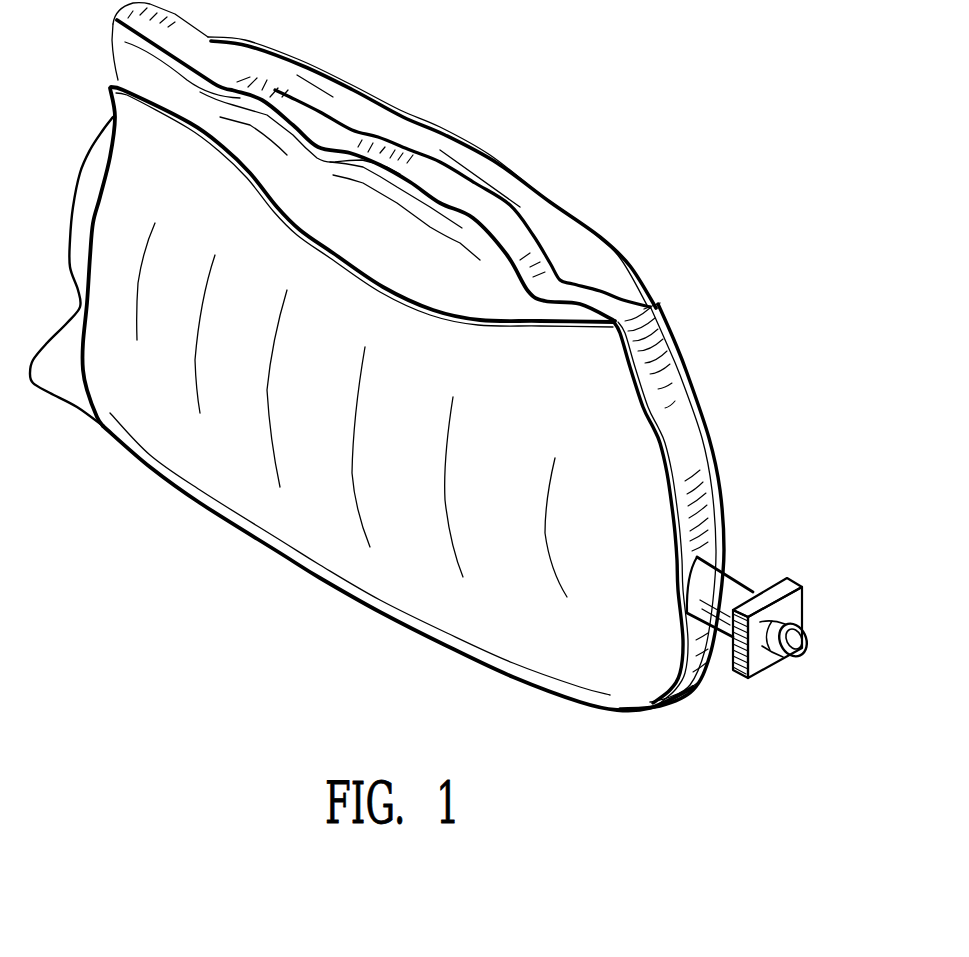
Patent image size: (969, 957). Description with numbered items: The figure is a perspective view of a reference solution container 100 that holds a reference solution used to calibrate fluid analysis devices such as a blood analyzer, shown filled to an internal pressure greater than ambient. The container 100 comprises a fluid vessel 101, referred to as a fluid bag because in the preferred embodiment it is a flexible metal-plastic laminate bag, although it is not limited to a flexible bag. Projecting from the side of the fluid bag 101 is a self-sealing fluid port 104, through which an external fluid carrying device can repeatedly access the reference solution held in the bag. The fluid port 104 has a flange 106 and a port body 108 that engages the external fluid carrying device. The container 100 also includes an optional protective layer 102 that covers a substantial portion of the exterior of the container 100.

The reference solution container 100 is at (737, 228).
The fluid vessel 101 is at (125, 45).
The protective layer 102 is at (423, 117).
The self-sealing fluid port 104 is at (768, 556).
The flange 106 is at (787, 578).
The port body 108 is at (787, 658).